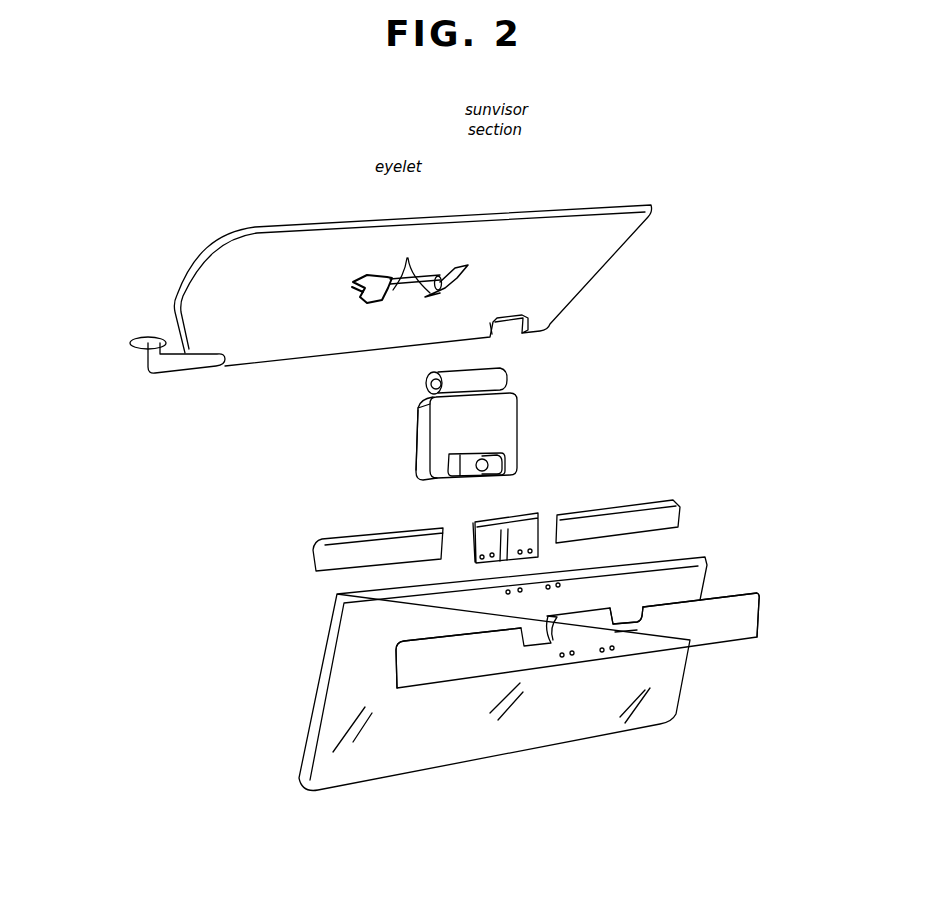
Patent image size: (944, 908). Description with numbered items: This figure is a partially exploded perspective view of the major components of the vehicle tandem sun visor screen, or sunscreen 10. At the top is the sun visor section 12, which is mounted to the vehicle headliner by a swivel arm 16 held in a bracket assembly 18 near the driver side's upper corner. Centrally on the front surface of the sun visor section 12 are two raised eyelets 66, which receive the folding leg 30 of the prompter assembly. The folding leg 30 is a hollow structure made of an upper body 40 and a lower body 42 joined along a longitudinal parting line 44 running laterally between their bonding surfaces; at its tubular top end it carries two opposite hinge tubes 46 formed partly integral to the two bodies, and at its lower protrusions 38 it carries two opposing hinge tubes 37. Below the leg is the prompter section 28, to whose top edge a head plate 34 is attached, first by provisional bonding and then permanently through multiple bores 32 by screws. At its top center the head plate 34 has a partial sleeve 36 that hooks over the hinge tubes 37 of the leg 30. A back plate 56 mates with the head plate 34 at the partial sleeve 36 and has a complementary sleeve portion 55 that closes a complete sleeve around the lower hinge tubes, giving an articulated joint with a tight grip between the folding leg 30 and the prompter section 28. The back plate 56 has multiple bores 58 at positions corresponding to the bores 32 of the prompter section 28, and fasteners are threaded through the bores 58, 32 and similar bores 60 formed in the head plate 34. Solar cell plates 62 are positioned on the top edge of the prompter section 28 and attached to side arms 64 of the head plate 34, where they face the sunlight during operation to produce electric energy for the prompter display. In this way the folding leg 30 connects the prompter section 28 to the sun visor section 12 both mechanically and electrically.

The sunscreen 10 is at (270, 432).
The sun visor section 12 is at (483, 215).
The swivel arm 16 is at (146, 373).
The bracket assembly 18 is at (145, 338).
The prompter section 28 is at (663, 712).
The folding leg 30 is at (417, 408).
The bores 32 is at (504, 592).
The head plate 34 is at (737, 592).
The partial sleeve 36 is at (597, 608).
The hinge tubes 37 is at (484, 472).
The protrusions 38 is at (515, 461).
The upper body 40 is at (498, 420).
The lower body 42 is at (414, 452).
The parting line 44 is at (414, 482).
The hinge tubes 46 is at (506, 378).
The sleeve portion 55 is at (474, 534).
The back plate 56 is at (474, 517).
The bores 58 is at (533, 553).
The bores 60 is at (562, 658).
The solar cell plates 62 is at (327, 558).
The side arms 64 is at (453, 676).
The eyelets 66 is at (407, 257).